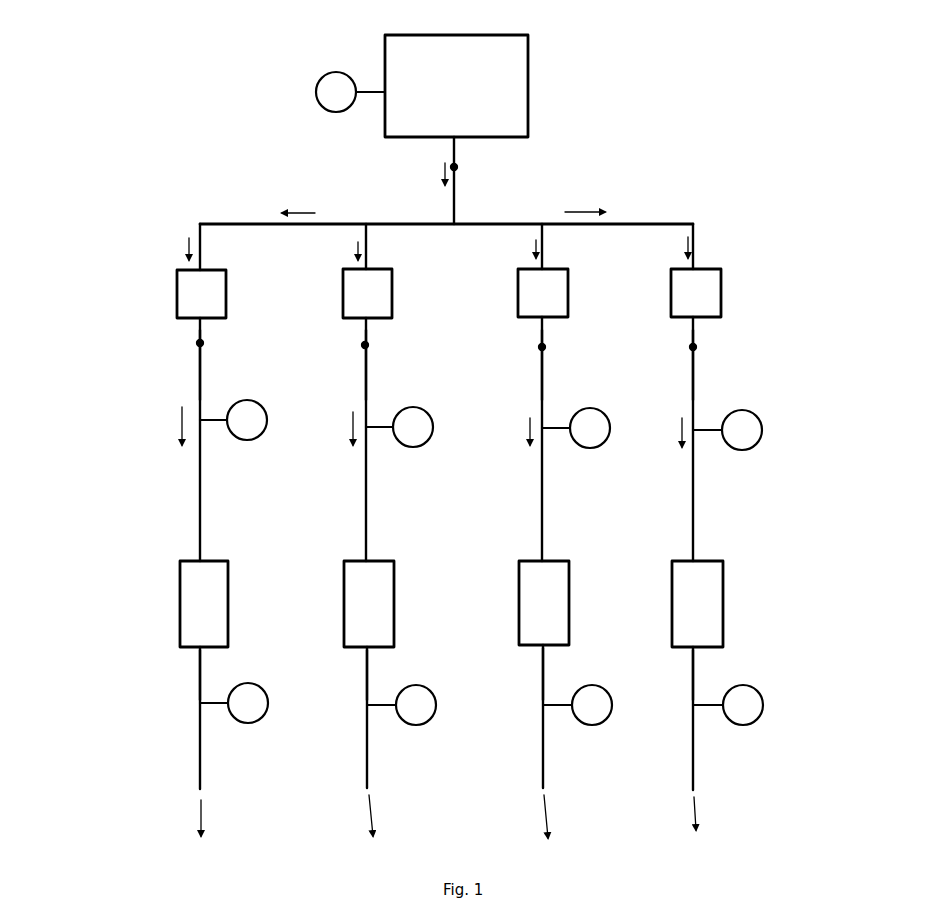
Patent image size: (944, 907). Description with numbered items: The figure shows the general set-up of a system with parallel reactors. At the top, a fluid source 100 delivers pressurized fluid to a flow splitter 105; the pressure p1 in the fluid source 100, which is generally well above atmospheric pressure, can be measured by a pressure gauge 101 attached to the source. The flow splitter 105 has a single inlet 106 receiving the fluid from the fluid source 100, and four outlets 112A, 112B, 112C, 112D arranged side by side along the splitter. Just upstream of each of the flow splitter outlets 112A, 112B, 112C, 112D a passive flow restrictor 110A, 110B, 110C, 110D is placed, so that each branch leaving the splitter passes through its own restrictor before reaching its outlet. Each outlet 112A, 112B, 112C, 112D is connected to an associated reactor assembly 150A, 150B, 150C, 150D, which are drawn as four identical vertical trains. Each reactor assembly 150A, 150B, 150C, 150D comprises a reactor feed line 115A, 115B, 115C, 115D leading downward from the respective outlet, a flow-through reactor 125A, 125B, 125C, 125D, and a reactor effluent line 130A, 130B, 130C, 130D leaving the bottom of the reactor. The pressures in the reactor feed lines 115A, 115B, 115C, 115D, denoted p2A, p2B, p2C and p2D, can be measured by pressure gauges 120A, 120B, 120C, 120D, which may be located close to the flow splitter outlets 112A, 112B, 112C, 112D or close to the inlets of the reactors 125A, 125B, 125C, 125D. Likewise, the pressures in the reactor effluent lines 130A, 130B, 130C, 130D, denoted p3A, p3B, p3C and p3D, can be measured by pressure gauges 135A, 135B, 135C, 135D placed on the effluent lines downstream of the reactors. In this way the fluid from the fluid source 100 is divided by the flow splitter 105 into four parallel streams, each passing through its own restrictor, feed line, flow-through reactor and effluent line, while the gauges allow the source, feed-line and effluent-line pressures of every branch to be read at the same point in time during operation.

The fluid source 100 is at (520, 78).
The pressure gauge 101 is at (333, 113).
The flow splitter 105 is at (492, 222).
The inlet 106 is at (458, 166).
The passive flow restrictor 110A is at (226, 293).
The passive flow restrictor 110B is at (392, 292).
The passive flow restrictor 110C is at (568, 292).
The passive flow restrictor 110D is at (721, 292).
The outlet 112A is at (204, 342).
The outlet 112B is at (369, 343).
The outlet 112C is at (546, 345).
The outlet 112D is at (697, 345).
The reactor feed line 115A is at (205, 365).
The reactor feed line 115B is at (369, 367).
The reactor feed line 115C is at (543, 373).
The reactor feed line 115D is at (695, 372).
The pressure gauge 120A is at (247, 434).
The pressure gauge 120B is at (415, 444).
The pressure gauge 120C is at (590, 446).
The pressure gauge 120D is at (742, 449).
The flow-through reactor 125A is at (225, 590).
The flow-through reactor 125B is at (390, 598).
The flow-through reactor 125C is at (568, 597).
The flow-through reactor 125D is at (715, 598).
The reactor effluent line 130A is at (202, 680).
The reactor effluent line 130B is at (370, 672).
The reactor effluent line 130C is at (543, 670).
The reactor effluent line 130D is at (697, 672).
The pressure gauge 135A is at (247, 724).
The pressure gauge 135B is at (413, 726).
The pressure gauge 135C is at (588, 726).
The pressure gauge 135D is at (740, 726).
The reactor assembly 150A is at (162, 540).
The reactor assembly 150B is at (338, 532).
The reactor assembly 150C is at (514, 533).
The reactor assembly 150D is at (676, 534).